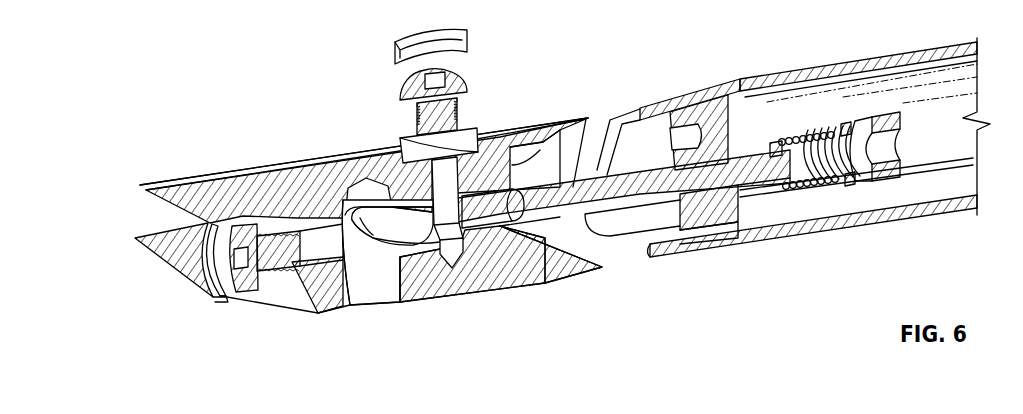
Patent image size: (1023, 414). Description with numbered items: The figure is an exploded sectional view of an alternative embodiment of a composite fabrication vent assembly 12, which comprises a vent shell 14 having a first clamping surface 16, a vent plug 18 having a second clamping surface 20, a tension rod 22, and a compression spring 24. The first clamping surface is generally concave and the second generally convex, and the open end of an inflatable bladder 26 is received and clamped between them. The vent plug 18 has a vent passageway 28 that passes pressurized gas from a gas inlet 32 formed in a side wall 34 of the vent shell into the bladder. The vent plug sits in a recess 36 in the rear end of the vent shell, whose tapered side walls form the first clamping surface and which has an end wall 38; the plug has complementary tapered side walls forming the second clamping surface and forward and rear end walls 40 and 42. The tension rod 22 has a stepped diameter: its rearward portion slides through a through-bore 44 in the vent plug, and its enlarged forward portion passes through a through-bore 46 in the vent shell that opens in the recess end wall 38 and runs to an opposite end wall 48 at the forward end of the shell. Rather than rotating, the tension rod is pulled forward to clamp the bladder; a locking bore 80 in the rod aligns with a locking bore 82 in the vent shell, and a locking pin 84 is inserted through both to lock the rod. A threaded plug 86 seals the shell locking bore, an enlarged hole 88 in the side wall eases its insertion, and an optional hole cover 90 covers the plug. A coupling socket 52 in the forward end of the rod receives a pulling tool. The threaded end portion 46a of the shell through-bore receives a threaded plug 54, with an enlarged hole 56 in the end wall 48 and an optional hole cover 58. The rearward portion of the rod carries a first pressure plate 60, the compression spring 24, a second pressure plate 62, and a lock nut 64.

The composite fabrication vent assembly 12 is at (242, 60).
The vent shell 14 is at (220, 168).
The first clamping surface 16 is at (533, 260).
The vent plug 18 is at (710, 227).
The second clamping surface 20 is at (687, 150).
The tension rod 22 is at (633, 187).
The compression spring 24 is at (856, 160).
The inflatable bladder 26 is at (823, 230).
The vent passageway 28 is at (717, 128).
The gas inlet 32 is at (360, 273).
The side wall 34 is at (447, 293).
The recess 36 is at (573, 153).
The end wall 38 is at (507, 167).
The forward end wall 40 is at (667, 213).
The rear end wall 42 is at (758, 223).
The through-bore 44 is at (673, 103).
The through-bore 46 is at (341, 260).
The end portion of the vent shell through-bore 46a is at (317, 247).
The end wall 48 is at (160, 197).
The coupling socket 52 is at (477, 220).
The threaded plug 54 is at (292, 303).
The enlarged hole 56 is at (270, 223).
The hole cover 58 is at (220, 303).
The first pressure plate 60 is at (770, 148).
The second pressure plate 62 is at (847, 130).
The lock nut 64 is at (877, 117).
The locking bore 80 is at (553, 213).
The locking bore 82 is at (418, 177).
The locking pin 84 is at (455, 170).
The threaded plug 86 is at (455, 82).
The enlarged hole 88 is at (430, 140).
The hole cover 90 is at (470, 43).